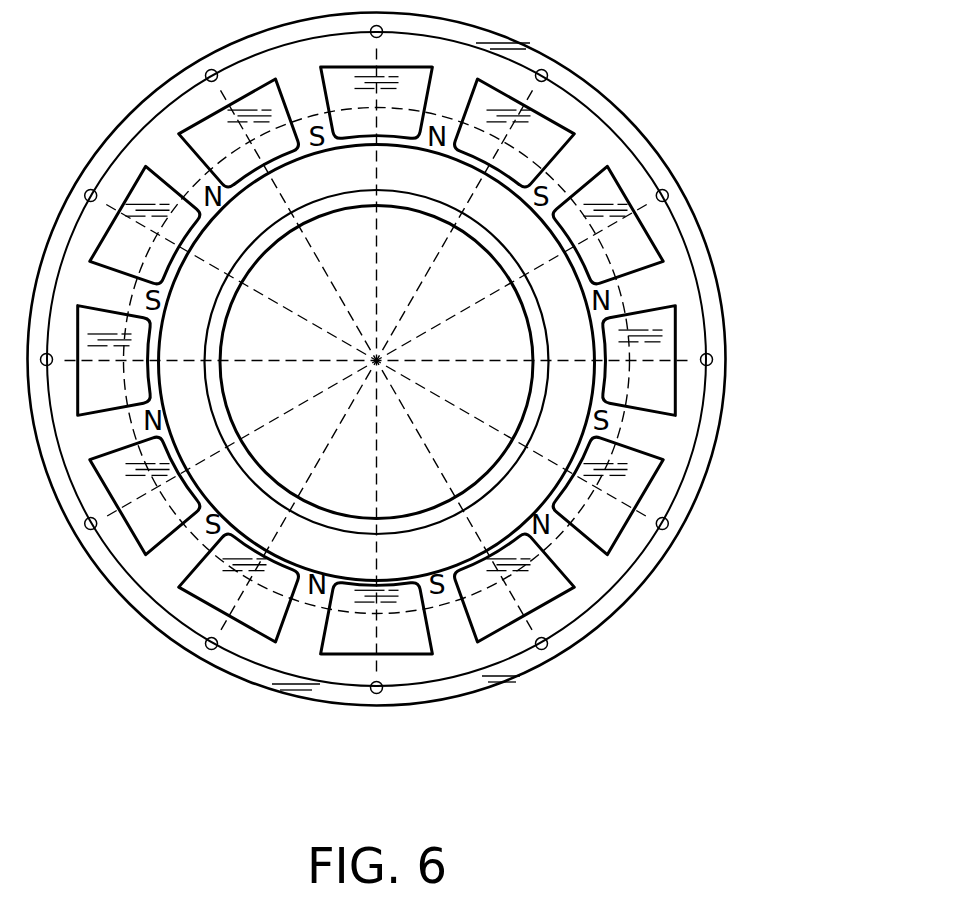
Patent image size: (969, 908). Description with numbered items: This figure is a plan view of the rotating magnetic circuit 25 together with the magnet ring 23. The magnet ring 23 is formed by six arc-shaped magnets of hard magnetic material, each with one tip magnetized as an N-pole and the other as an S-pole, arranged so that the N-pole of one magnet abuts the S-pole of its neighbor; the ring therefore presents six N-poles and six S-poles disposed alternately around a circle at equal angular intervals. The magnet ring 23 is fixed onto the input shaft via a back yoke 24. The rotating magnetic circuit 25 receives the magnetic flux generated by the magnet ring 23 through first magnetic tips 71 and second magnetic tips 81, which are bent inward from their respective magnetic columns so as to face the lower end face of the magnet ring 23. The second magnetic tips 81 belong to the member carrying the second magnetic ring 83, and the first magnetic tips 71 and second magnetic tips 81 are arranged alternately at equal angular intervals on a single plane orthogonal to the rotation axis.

The first magnetic tips 71 is at (607, 190).
The second magnetic tips 81 is at (675, 322).
The second magnetic ring 83 is at (726, 400).
The magnet ring 23 is at (613, 420).
The back yoke 24 is at (527, 490).
The rotating magnetic circuit 25 is at (641, 603).